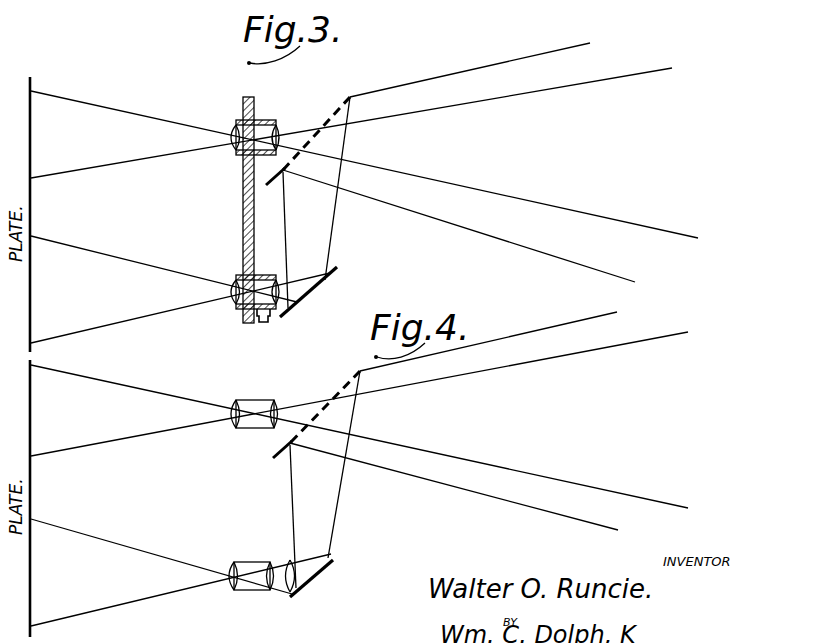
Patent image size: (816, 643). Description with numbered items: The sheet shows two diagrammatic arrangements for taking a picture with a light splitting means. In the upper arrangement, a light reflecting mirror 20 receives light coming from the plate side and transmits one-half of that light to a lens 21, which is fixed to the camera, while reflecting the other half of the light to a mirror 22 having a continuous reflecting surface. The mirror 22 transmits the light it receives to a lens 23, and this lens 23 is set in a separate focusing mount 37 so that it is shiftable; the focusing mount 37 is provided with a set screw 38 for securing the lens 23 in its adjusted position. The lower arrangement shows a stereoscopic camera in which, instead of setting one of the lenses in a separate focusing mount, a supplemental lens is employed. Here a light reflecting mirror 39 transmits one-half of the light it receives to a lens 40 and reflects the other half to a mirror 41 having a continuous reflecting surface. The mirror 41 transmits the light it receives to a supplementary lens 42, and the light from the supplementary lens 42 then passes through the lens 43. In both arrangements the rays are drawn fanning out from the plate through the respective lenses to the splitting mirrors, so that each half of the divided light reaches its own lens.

In FIG. 3, the light reflecting mirror 20 is at (351, 97).
In FIG. 3, the lens 21 is at (262, 128).
In FIG. 3, the mirror 22 is at (337, 269).
In FIG. 3, the lens 23 is at (243, 282).
In FIG. 3, the focusing mount 37 is at (241, 310).
In FIG. 3, the set screw 38 is at (263, 323).
In FIG. 4, the light reflecting mirror 39 is at (360, 371).
In FIG. 4, the lens 40 is at (258, 406).
In FIG. 4, the mirror 41 is at (333, 562).
In FIG. 4, the supplementary lens 42 is at (287, 562).
In FIG. 4, the lens 43 is at (240, 562).